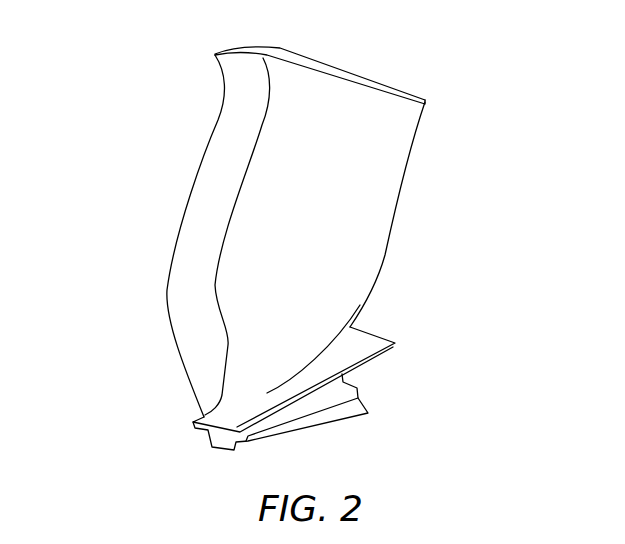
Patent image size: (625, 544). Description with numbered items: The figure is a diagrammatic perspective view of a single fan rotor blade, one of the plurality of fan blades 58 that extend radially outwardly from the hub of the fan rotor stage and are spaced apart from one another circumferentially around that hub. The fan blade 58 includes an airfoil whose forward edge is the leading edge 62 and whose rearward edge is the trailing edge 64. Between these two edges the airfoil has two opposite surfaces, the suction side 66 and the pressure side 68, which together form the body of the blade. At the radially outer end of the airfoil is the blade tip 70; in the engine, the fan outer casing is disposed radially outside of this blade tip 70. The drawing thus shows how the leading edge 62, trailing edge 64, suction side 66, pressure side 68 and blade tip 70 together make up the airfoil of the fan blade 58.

The fan blade 58 is at (268, 208).
The leading edge 62 is at (156, 208).
The trailing edge 64 is at (381, 270).
The suction side 66 is at (368, 74).
The pressure side 68 is at (320, 220).
The blade tip 70 is at (322, 65).